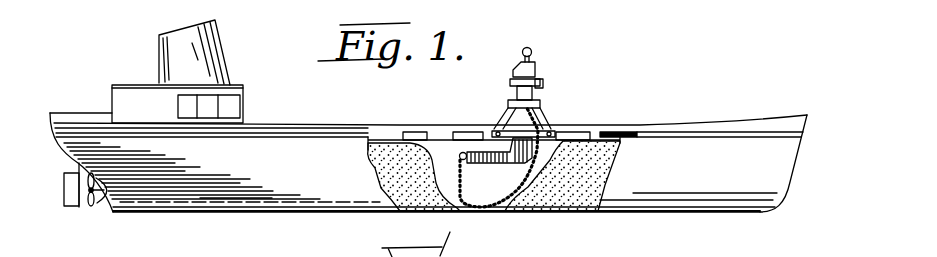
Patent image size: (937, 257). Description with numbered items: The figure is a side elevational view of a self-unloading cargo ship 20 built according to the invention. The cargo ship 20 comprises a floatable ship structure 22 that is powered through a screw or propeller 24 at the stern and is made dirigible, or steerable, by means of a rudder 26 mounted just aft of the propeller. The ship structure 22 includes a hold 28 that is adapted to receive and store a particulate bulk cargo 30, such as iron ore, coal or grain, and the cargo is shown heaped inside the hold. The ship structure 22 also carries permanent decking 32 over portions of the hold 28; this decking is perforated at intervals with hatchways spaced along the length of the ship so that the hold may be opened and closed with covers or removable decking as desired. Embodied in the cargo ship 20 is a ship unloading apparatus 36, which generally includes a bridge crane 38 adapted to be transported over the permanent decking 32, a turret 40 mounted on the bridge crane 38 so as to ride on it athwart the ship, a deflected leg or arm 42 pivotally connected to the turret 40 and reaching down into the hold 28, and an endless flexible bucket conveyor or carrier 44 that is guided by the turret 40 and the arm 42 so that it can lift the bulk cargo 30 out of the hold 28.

The cargo ship 20 is at (701, 72).
The floatable ship structure 22 is at (793, 183).
The propeller 24 is at (88, 206).
The rudder 26 is at (73, 206).
The hold 28 is at (433, 143).
The particulate bulk cargo 30 is at (589, 180).
The permanent decking 32 is at (613, 133).
The ship unloading apparatus 36 is at (549, 89).
The bridge crane 38 is at (539, 123).
The turret 40 is at (531, 66).
The deflected arm 42 is at (480, 153).
The endless flexible bucket conveyor 44 is at (505, 200).